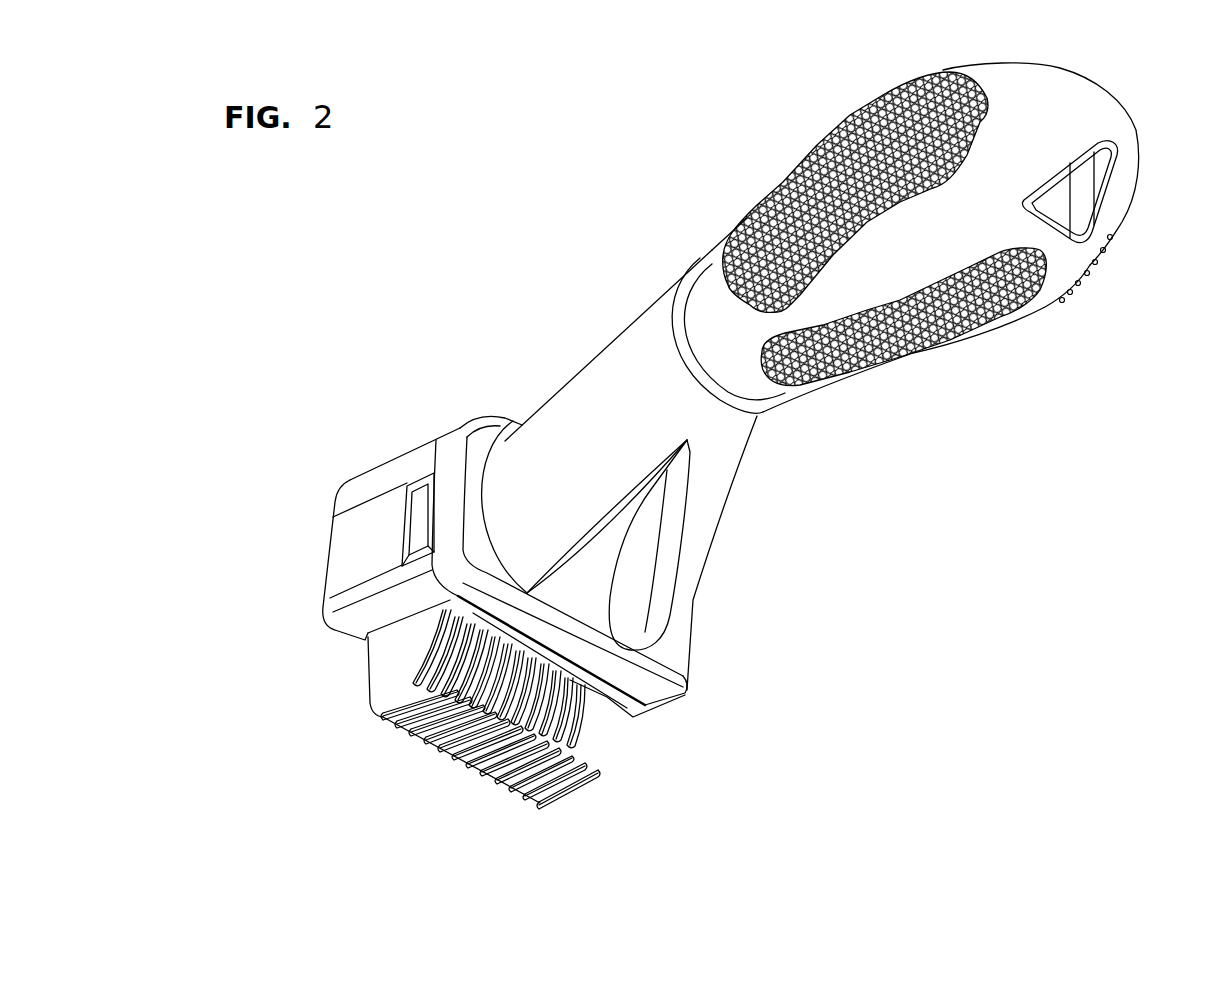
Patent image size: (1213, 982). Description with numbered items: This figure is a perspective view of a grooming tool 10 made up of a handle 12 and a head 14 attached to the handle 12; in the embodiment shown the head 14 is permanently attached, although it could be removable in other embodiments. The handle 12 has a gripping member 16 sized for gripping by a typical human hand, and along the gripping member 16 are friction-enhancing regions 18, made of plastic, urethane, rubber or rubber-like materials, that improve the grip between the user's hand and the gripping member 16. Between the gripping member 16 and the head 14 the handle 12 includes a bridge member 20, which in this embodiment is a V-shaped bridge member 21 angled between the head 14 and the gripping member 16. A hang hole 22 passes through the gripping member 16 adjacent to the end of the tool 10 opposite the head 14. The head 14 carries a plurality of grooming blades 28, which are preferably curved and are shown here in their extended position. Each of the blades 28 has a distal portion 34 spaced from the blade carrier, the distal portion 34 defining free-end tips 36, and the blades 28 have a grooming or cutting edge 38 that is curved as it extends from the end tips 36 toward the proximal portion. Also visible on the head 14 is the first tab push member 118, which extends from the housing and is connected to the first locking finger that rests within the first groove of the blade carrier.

The grooming tool 10 is at (709, 60).
The handle 12 is at (696, 184).
The head 14 is at (336, 413).
The gripping member 16 is at (1052, 72).
The friction-enhancing regions 18 is at (881, 110).
The bridge member 20 is at (566, 390).
The V-shaped bridge member 21 is at (720, 518).
The hang hole 22 is at (1105, 193).
The grooming blades 28 is at (372, 683).
The distal portion 34 is at (540, 806).
The free-end tips 36 is at (597, 773).
The cutting edge 38 is at (418, 657).
The first tab push member 118 is at (408, 530).